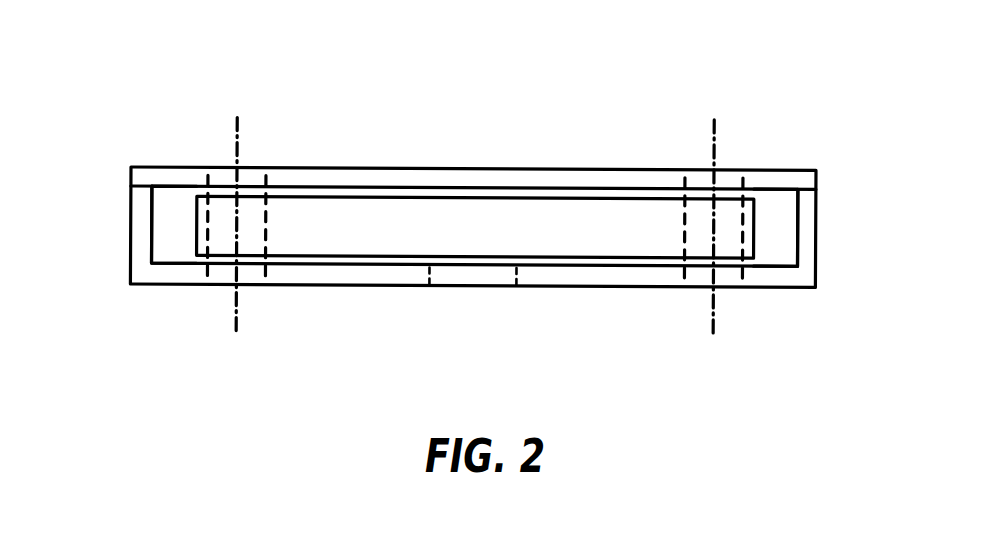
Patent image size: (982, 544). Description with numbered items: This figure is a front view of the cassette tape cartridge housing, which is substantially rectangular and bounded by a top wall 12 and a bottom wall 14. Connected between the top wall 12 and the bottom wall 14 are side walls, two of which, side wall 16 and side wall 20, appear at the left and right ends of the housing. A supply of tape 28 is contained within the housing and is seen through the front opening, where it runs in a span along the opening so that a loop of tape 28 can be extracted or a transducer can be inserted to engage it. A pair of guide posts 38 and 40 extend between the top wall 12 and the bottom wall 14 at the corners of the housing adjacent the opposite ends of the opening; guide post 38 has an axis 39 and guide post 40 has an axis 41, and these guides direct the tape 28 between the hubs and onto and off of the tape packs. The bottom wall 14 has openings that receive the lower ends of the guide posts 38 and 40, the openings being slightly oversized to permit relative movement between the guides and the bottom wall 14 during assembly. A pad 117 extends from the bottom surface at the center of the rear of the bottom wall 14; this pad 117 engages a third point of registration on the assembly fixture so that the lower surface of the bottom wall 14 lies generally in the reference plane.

The top wall 12 is at (550, 182).
The bottom wall 14 is at (340, 277).
The side wall 16 is at (140, 229).
The side wall 20 is at (808, 242).
The tape 28 is at (402, 232).
The guide post 38 is at (745, 262).
The axis 39 is at (715, 138).
The guide post 40 is at (267, 262).
The axis 41 is at (238, 137).
The pad 117 is at (472, 275).